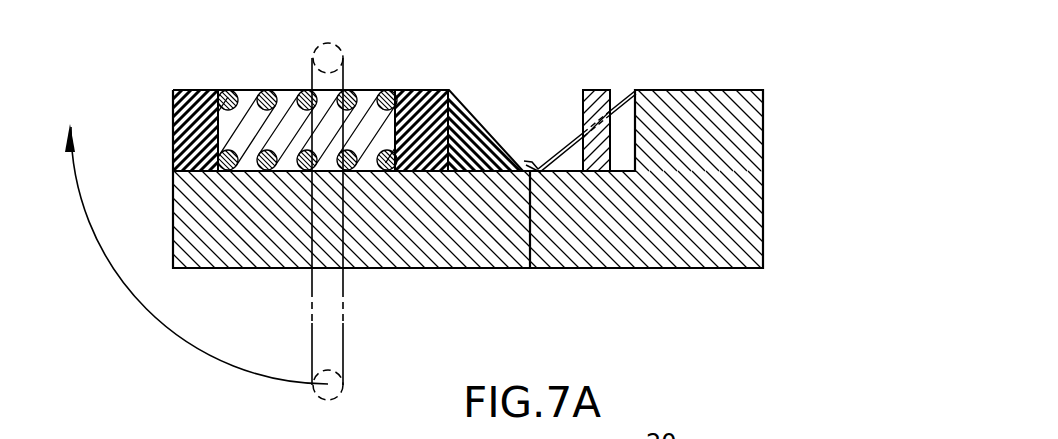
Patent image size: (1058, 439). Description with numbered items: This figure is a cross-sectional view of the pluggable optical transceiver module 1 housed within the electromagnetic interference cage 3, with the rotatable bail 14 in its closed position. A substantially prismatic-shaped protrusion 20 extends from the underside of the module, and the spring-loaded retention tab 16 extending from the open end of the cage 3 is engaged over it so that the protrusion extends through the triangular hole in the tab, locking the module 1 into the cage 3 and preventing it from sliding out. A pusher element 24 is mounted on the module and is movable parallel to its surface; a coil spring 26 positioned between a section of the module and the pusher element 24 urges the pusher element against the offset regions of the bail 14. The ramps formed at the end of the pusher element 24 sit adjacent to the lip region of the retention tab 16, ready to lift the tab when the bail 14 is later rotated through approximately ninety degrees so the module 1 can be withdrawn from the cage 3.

The pluggable optical transceiver module 1 is at (480, 245).
The electromagnetic interference (EMI) cage 3 is at (678, 242).
The bail 14 is at (343, 338).
The retention tab 16 is at (622, 90).
The protrusion 20 is at (590, 90).
The pusher element 24 is at (430, 90).
The coil spring 26 is at (252, 110).